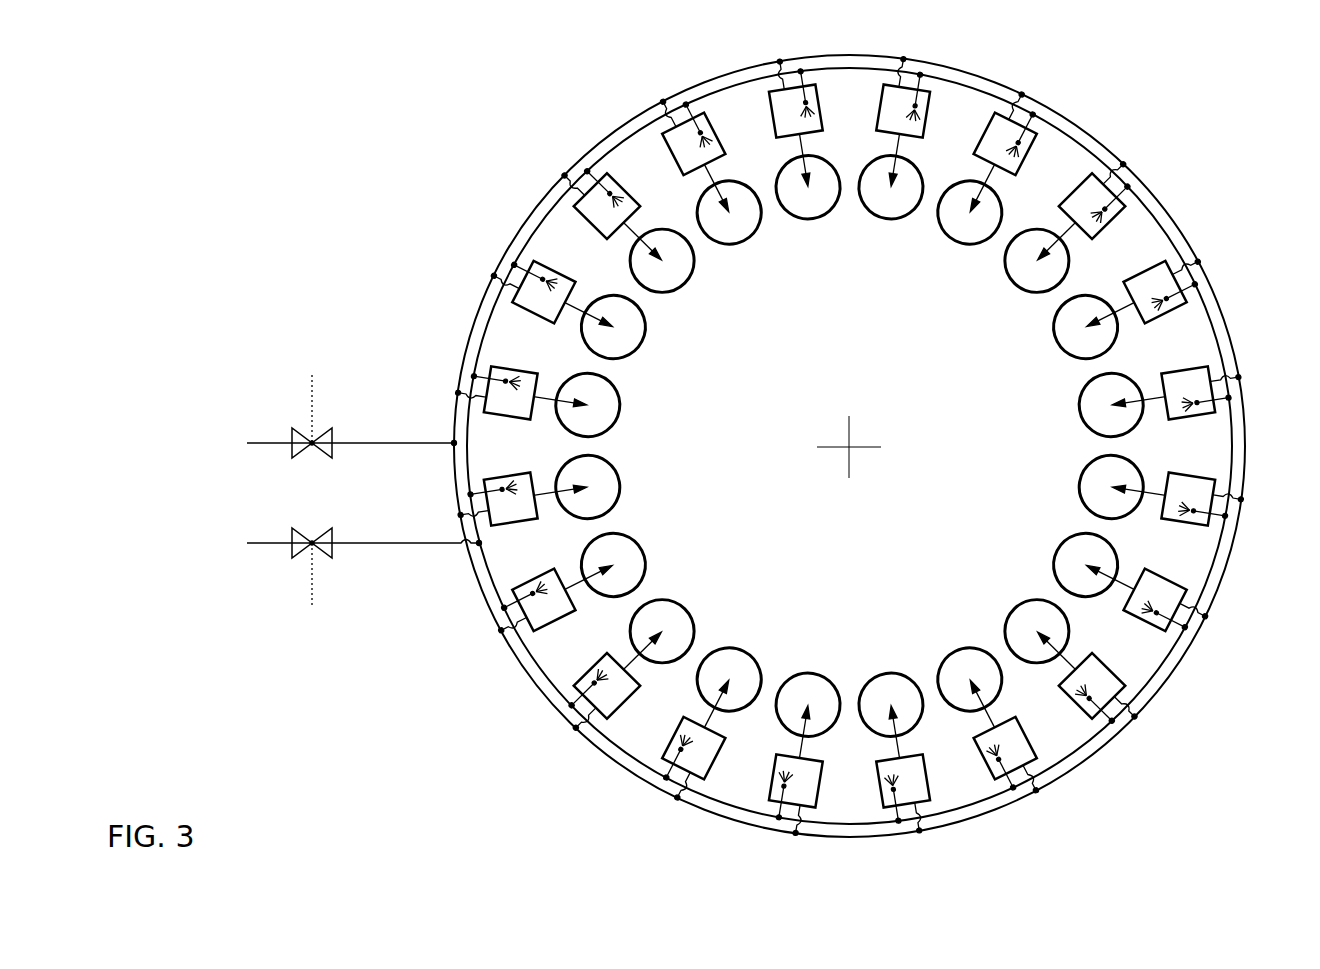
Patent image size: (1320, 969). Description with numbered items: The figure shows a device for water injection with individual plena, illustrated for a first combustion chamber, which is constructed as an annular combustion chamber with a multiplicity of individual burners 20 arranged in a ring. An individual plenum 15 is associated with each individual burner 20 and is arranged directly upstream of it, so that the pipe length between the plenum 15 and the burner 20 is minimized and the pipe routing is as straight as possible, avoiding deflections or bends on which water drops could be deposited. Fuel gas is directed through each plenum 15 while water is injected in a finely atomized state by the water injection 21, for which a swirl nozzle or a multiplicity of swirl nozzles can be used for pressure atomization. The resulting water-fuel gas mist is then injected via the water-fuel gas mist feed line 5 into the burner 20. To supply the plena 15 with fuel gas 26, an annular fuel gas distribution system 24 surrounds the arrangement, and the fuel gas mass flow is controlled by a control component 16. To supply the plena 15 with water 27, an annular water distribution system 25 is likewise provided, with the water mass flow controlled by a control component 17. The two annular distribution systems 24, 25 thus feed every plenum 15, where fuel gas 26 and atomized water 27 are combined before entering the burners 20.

The water-fuel gas mist feed line 5 is at (1002, 167).
The individual plenum 15 is at (528, 285).
The control component 16 is at (311, 392).
The control component 17 is at (311, 596).
The burner 20 is at (612, 577).
The water injection 21 is at (603, 193).
The fuel gas distribution system 24 is at (1095, 755).
The water distribution system 25 is at (1165, 663).
The fuel gas 26 is at (327, 443).
The water 27 is at (339, 543).